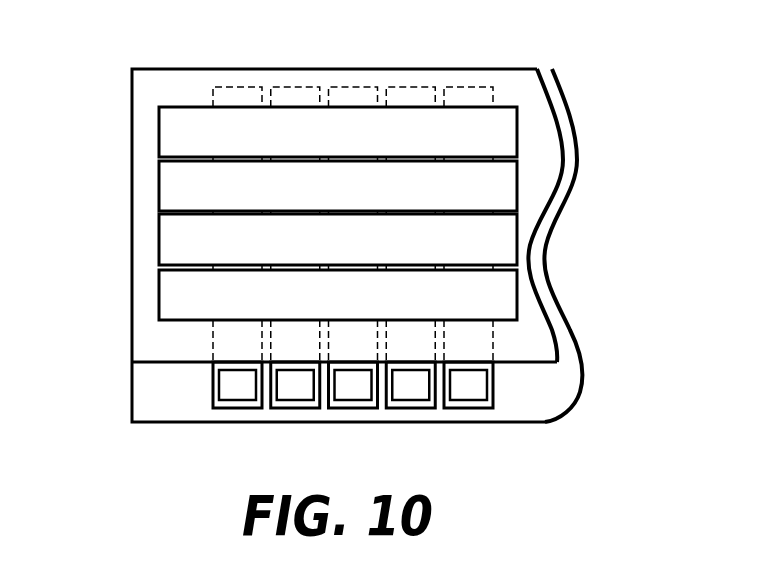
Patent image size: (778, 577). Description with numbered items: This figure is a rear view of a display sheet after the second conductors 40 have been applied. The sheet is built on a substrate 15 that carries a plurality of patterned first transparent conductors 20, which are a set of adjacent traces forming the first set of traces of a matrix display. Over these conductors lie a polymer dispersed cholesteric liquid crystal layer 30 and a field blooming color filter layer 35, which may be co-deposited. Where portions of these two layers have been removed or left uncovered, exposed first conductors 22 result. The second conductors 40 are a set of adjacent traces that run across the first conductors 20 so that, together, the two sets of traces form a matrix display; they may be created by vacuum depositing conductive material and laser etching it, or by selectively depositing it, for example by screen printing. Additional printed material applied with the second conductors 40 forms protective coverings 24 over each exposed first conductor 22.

The substrate 15 is at (568, 343).
The first transparent conductors 20 is at (352, 220).
The exposed first conductors 22 is at (293, 408).
The protective coverings 24 is at (412, 400).
The polymer dispersed cholesteric liquid crystal layer 30 is at (533, 100).
The field blooming color filter layer 35 is at (596, 113).
The second conductors 40 is at (517, 135).